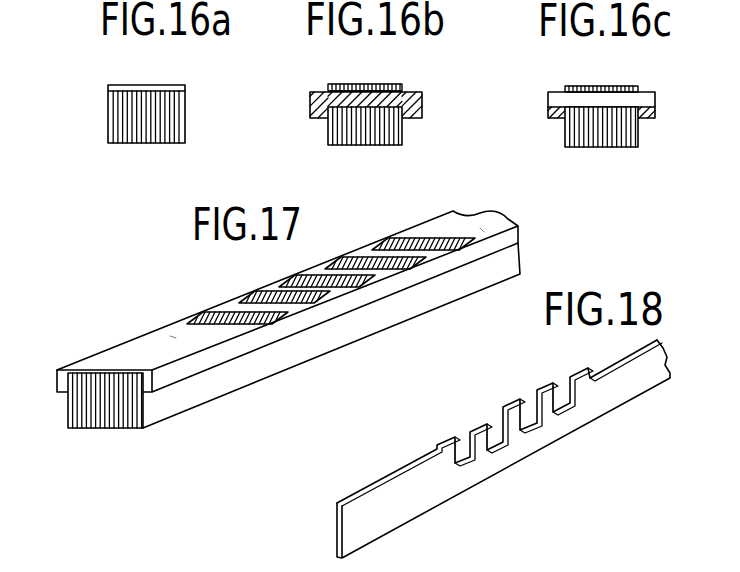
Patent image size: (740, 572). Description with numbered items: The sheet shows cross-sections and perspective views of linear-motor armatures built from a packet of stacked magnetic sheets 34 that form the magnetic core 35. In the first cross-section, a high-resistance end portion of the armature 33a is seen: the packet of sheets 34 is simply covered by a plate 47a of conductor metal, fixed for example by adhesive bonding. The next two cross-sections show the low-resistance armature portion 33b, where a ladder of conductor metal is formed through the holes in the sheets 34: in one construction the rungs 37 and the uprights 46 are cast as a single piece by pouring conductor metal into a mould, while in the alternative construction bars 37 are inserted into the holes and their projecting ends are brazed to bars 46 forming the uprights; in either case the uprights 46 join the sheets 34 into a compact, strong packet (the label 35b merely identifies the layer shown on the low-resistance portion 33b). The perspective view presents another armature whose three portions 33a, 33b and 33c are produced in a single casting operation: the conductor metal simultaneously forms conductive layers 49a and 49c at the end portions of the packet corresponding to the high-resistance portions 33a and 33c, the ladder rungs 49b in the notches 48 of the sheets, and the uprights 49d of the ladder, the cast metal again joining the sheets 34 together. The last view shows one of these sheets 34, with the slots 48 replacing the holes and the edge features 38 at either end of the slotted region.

In FIG. 16a, the armature portion of high electric resistance 33a is at (168, 80).
In FIG. 17, the armature portion of high electric resistance 33a is at (120, 341).
In FIG. 16c, the armature portion of low electric resistance 33b is at (570, 81).
In FIG. 17, the armature portion of low electric resistance 33b is at (262, 282).
In FIG. 17, the armature portion of high electric resistance 33c is at (410, 227).
In FIG. 16a, the sheets 34 is at (167, 123).
In FIG. 16b, the sheets 34 is at (387, 135).
In FIG. 16c, the sheets 34 is at (633, 140).
In FIG. 17, the sheets 34 is at (82, 423).
In FIG. 18, the sheets 34 is at (353, 520).
In FIG. 17, the magnetic core 35 is at (110, 413).
In FIG. 16b, the contact layer 35b is at (340, 82).
In FIG. 16b, the rungs 37 is at (385, 91).
In FIG. 16c, the rungs 37 is at (645, 100).
In FIG. 18, the contact rail shoulder 38 is at (436, 448).
In FIG. 16b, the uprights 46 is at (321, 112).
In FIG. 16c, the uprights 46 is at (548, 115).
In FIG. 16a, the plate 47a is at (123, 85).
In FIG. 18, the slots 48 is at (497, 432).
In FIG. 17, the conductive layer 49a is at (175, 337).
In FIG. 17, the ladder rungs 49b is at (367, 268).
In FIG. 17, the conductive layer 49c is at (482, 230).
In FIG. 17, the uprights 49d is at (58, 387).